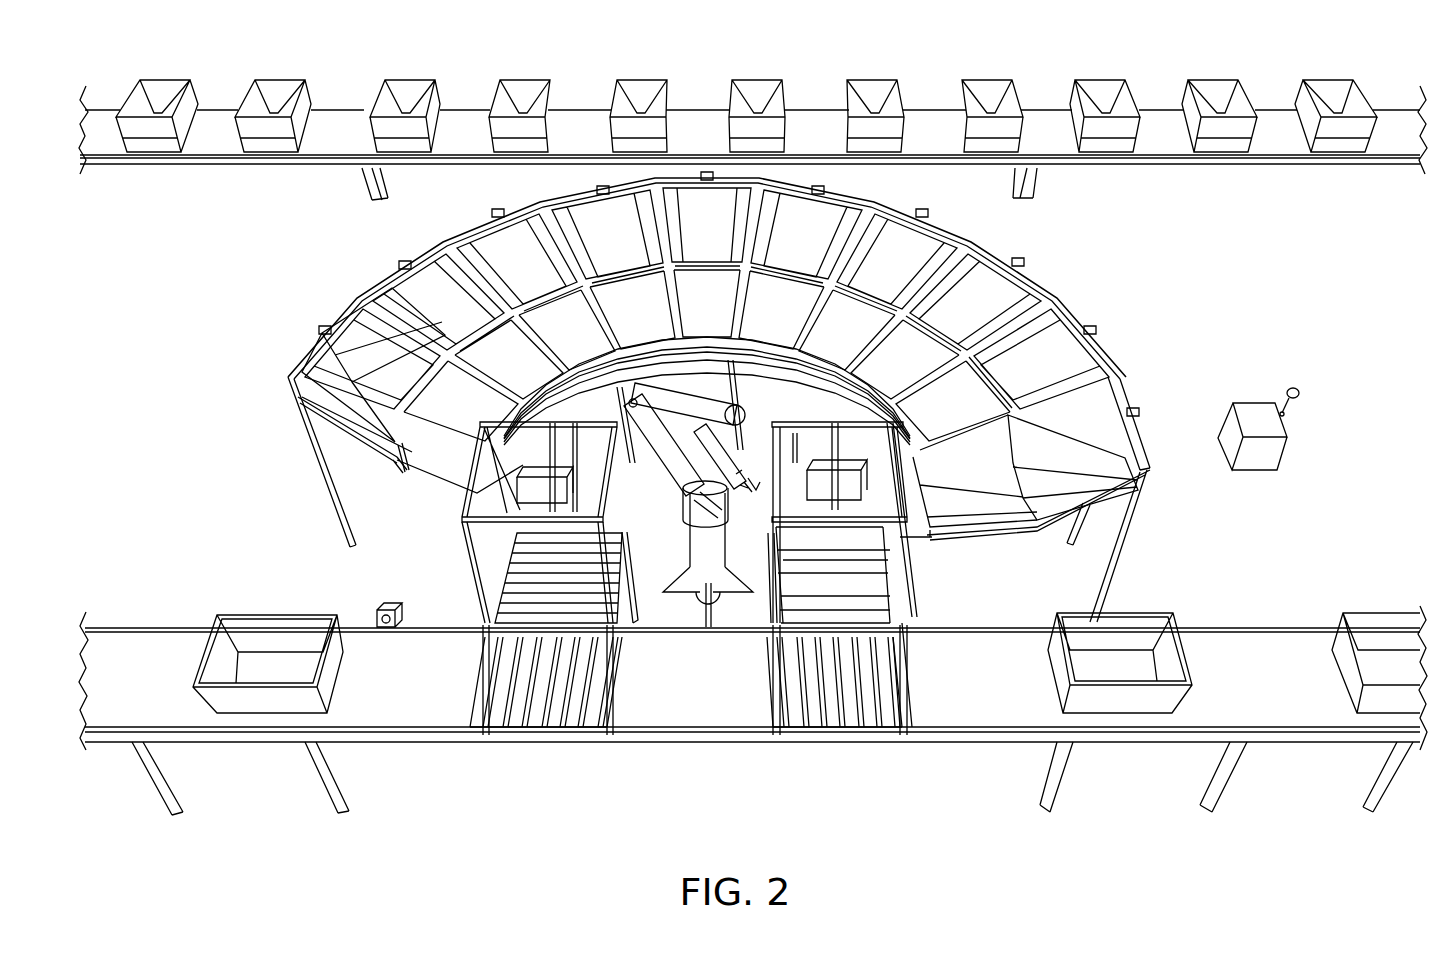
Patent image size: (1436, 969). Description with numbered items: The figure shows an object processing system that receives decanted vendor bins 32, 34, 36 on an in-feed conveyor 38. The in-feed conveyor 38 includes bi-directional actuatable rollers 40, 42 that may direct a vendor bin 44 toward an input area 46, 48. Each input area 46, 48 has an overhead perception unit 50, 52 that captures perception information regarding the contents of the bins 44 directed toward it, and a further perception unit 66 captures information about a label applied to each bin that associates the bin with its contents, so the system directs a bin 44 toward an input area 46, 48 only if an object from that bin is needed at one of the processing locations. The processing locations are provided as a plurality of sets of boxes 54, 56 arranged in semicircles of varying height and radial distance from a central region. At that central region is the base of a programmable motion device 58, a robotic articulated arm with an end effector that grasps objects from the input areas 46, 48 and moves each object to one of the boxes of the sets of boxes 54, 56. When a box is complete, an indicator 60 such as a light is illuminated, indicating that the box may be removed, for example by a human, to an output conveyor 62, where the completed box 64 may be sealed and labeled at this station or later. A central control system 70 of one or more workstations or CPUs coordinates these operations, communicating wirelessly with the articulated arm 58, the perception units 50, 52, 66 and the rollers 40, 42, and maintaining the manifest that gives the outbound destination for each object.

The vendor bin 32 is at (277, 628).
The vendor bin 34 is at (1133, 703).
The vendor bin 36 is at (1385, 625).
The in-feed conveyor 38 is at (399, 691).
The bi-directional actuatable roller 40 is at (852, 720).
The bi-directional actuatable roller 42 is at (560, 720).
The vendor bin 44 is at (875, 598).
The input area 46 is at (765, 621).
The input area 48 is at (646, 621).
The overhead perception unit 50 is at (812, 470).
The overhead perception unit 52 is at (567, 487).
The set of boxes 54 is at (380, 440).
The set of boxes 56 is at (441, 478).
The programmable motion device 58 is at (722, 408).
The indicator 60 is at (315, 327).
The output conveyor 62 is at (819, 122).
The completed box 64 is at (413, 92).
The perception unit 66 is at (385, 602).
The central control system 70 is at (1287, 446).